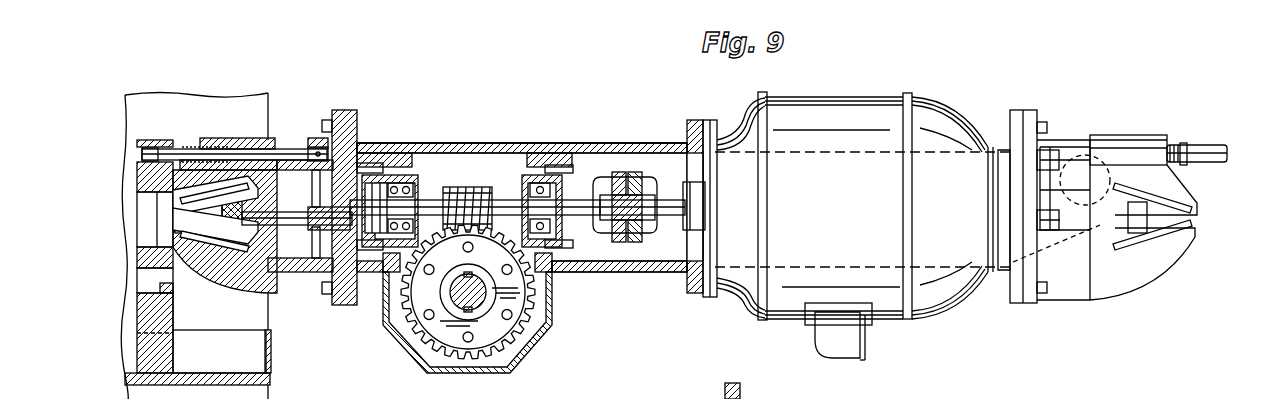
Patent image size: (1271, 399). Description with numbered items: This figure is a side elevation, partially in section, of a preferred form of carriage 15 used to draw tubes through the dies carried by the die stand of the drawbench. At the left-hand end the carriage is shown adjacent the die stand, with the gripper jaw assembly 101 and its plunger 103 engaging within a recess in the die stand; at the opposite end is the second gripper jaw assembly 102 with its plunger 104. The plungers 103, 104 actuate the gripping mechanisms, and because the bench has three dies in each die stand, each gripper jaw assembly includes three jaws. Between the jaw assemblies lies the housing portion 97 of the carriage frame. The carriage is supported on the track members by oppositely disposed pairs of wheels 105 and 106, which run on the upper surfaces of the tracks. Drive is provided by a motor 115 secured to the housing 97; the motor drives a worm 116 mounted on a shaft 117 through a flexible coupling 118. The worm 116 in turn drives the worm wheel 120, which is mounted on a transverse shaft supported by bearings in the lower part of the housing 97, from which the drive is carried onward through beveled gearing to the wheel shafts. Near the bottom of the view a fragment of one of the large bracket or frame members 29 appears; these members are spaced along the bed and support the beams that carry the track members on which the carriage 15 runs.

The carriage 15 is at (852, 95).
The frame member 29 is at (745, 396).
The housing portion 97 is at (603, 148).
The gripper jaw assembly 101 is at (237, 277).
The gripper jaw assembly 102 is at (1137, 158).
The plunger 103 is at (192, 150).
The plunger 104 is at (1205, 150).
The wheels 105 is at (355, 185).
The wheels 106 is at (1073, 142).
The motor 115 is at (862, 206).
The worm 116 is at (473, 190).
The shaft 117 is at (412, 200).
The flexible coupling 118 is at (642, 223).
The worm wheel 120 is at (533, 333).